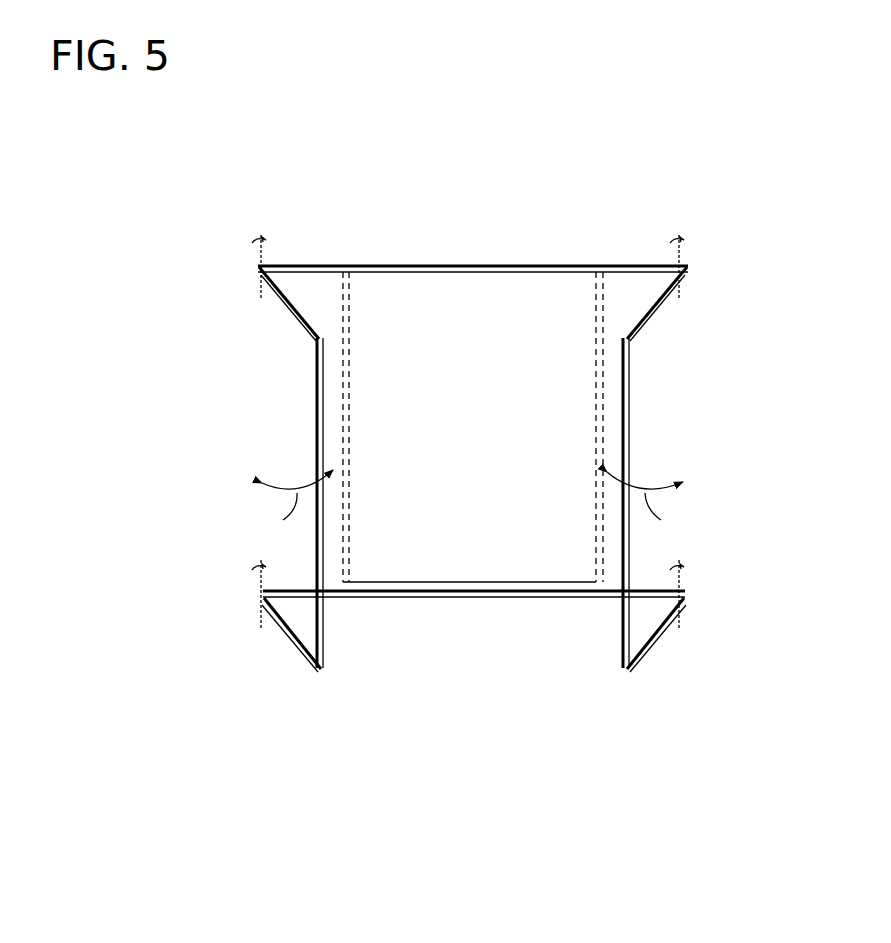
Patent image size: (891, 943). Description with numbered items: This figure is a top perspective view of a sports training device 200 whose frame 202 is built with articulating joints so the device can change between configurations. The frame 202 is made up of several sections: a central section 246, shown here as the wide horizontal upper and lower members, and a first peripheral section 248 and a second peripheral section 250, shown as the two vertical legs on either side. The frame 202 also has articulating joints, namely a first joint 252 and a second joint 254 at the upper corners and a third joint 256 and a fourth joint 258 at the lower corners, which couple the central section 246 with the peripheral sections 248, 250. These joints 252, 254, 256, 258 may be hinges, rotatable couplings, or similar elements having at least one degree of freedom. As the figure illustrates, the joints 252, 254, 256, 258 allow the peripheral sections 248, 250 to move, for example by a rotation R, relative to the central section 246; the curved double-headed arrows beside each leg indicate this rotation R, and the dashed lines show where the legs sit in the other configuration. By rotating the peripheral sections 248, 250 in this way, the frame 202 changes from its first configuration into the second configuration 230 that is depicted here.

The sports training device 200 is at (497, 467).
The frame 202 is at (761, 278).
The second configuration 230 is at (602, 246).
The central section 246 is at (638, 750).
The first peripheral section 248 is at (325, 698).
The second peripheral section 250 is at (678, 698).
The first joint 252 is at (242, 280).
The second joint 254 is at (705, 262).
The third joint 256 is at (216, 627).
The fourth joint 258 is at (706, 600).
The rotation R is at (470, 503).